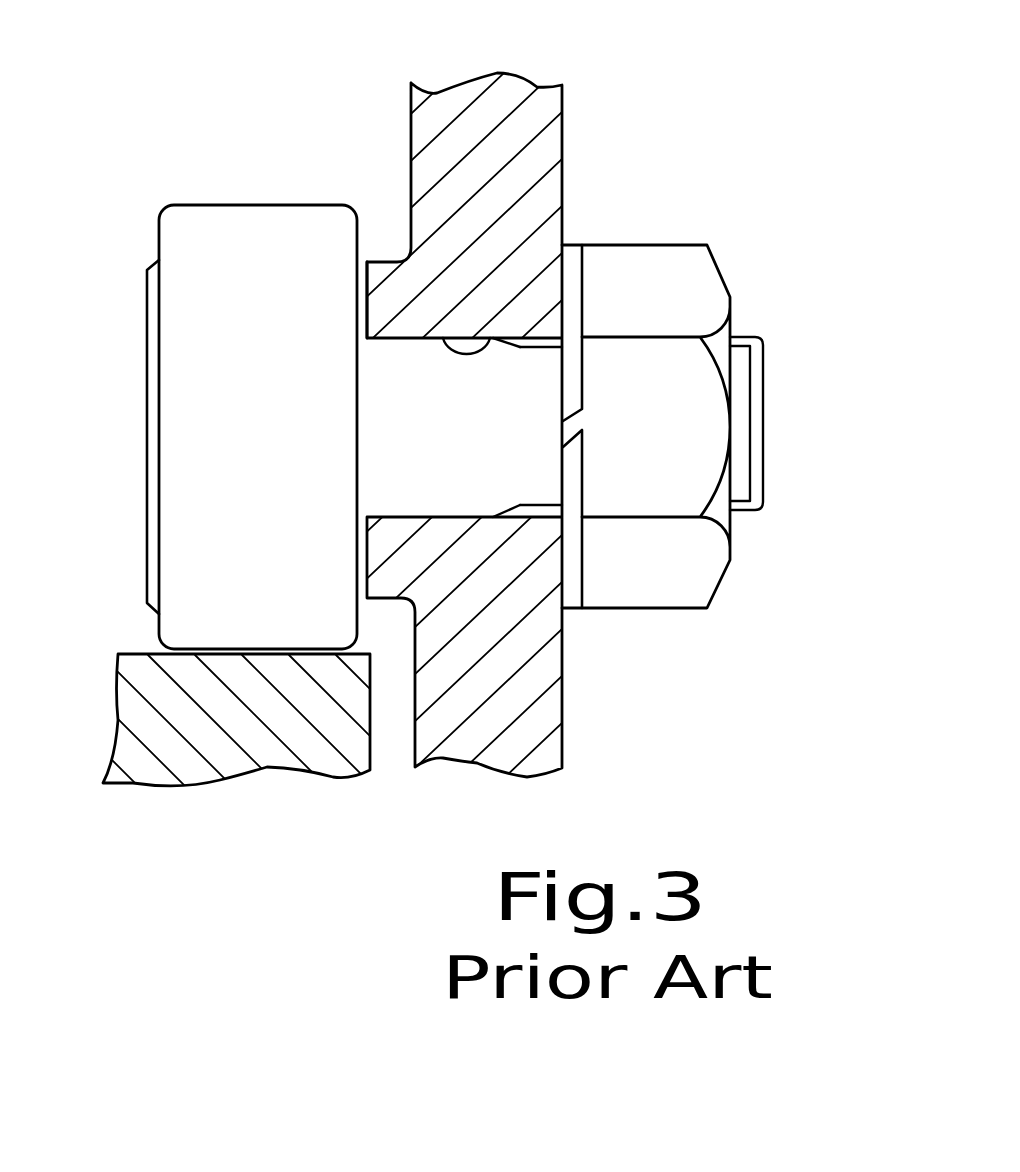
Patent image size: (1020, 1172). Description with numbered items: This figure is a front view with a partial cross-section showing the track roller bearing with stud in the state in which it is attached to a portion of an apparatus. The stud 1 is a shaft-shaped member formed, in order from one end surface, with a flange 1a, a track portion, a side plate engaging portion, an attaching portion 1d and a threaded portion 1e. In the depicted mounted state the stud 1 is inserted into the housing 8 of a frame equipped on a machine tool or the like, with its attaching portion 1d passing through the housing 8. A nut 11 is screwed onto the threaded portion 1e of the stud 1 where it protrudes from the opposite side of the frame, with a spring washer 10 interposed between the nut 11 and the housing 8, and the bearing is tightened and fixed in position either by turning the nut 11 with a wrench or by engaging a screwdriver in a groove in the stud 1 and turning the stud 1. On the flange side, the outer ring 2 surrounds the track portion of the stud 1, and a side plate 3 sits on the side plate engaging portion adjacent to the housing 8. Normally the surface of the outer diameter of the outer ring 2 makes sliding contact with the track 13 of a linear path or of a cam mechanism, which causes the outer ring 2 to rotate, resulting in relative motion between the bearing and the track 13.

The stud 1 is at (766, 385).
The flange 1a is at (153, 350).
The attaching portion 1d is at (435, 482).
The threaded portion 1e is at (745, 337).
The outer ring 2 is at (232, 215).
The side plate 3 is at (360, 262).
The housing 8 is at (477, 338).
The spring washer 10 is at (574, 258).
The nut 11 is at (650, 277).
The track 13 is at (140, 666).